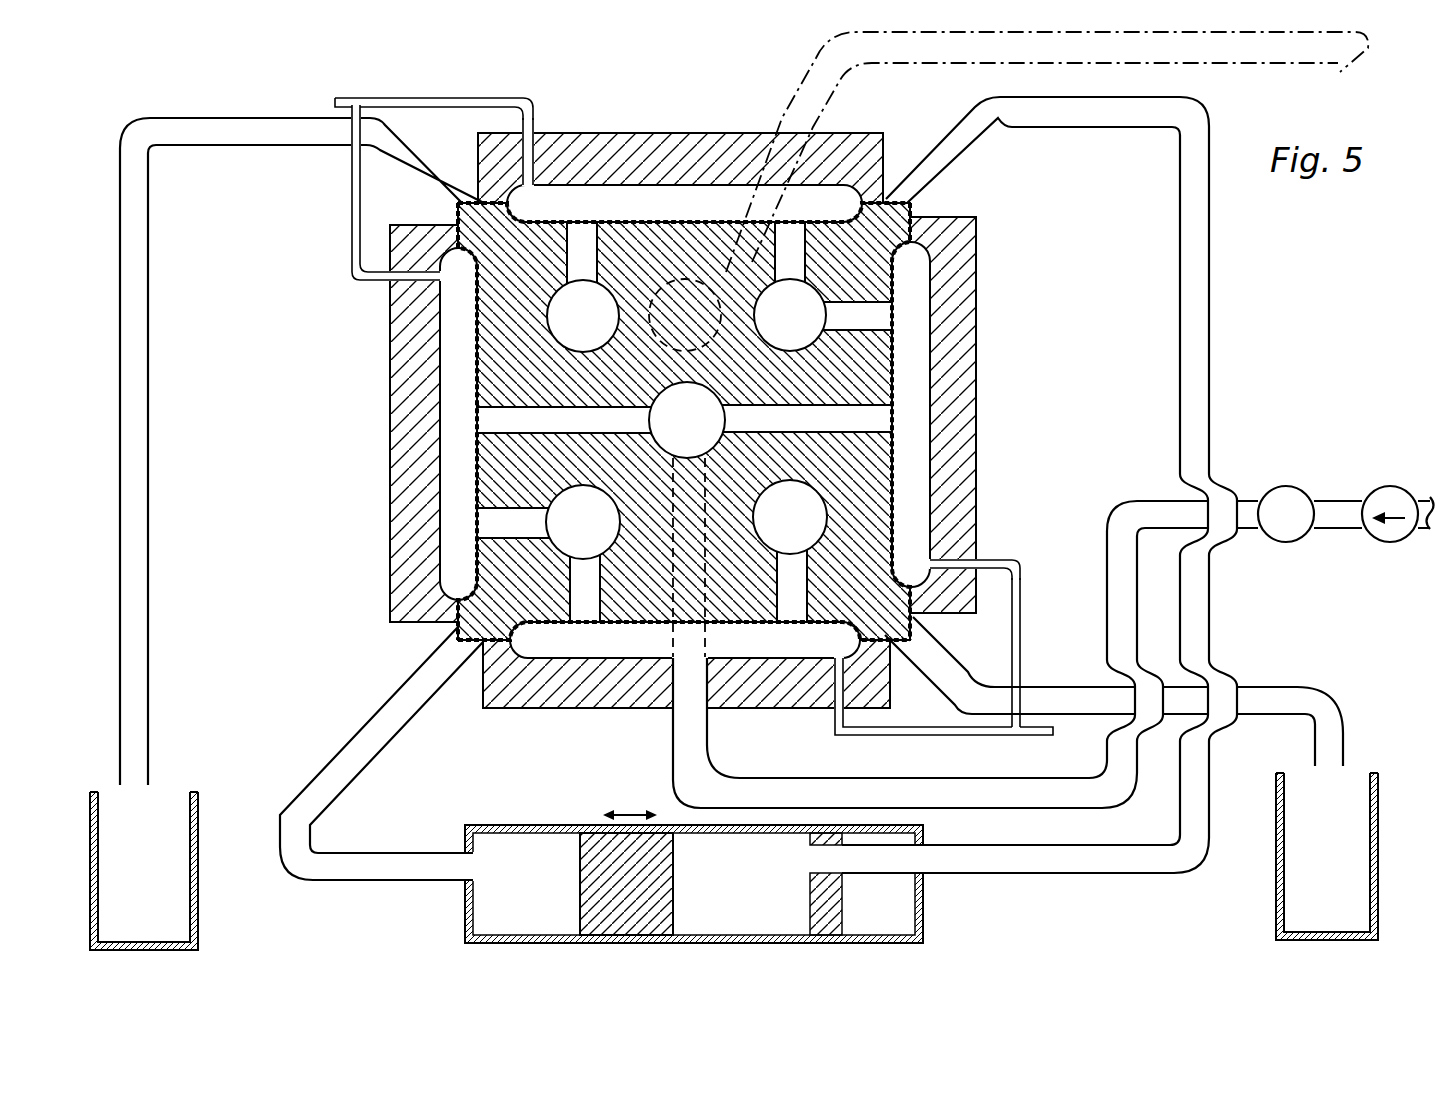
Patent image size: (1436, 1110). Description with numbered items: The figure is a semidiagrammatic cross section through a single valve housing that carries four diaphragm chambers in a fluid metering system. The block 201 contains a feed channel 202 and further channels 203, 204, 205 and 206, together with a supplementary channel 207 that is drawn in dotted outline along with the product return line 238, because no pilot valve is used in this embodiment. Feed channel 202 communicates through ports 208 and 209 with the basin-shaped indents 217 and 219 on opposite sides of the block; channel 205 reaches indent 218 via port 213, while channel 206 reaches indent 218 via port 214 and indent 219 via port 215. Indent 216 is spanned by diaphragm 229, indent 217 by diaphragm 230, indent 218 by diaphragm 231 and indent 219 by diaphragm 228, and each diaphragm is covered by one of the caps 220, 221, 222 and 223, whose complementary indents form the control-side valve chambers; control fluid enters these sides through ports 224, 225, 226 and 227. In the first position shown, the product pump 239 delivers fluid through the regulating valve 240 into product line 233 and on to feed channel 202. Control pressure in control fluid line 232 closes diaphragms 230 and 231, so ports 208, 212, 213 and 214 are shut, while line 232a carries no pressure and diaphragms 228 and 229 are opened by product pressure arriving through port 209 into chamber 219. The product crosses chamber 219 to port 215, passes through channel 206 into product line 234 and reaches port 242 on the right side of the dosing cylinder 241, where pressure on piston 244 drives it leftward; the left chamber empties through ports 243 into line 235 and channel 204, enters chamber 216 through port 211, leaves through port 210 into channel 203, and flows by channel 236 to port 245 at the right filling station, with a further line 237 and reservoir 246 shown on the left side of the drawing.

The block 201 is at (878, 480).
The feed channel 202 is at (673, 430).
The channel 203 is at (776, 531).
The channel 204 is at (569, 534).
The channel 205 is at (569, 328).
The channel 206 is at (776, 327).
The supplementary channel 207 is at (700, 282).
The port 208 is at (546, 428).
The port 209 is at (791, 428).
The port 210 is at (790, 600).
The port 211 is at (585, 600).
The port 212 is at (528, 534).
The port 213 is at (575, 250).
The port 214 is at (792, 247).
The port 215 is at (873, 327).
The indent 216 is at (721, 649).
The indent 217 is at (448, 398).
The indent 218 is at (636, 211).
The indent 219 is at (915, 343).
The cap 220 is at (665, 710).
The cap 221 is at (395, 543).
The cap 222 is at (640, 133).
The cap 223 is at (960, 290).
The port 224 is at (977, 562).
The port 225 is at (835, 712).
The port 226 is at (378, 278).
The port 227 is at (536, 137).
The diaphragm 228 is at (920, 416).
The diaphragm 229 is at (640, 655).
The diaphragm 230 is at (475, 312).
The diaphragm 231 is at (613, 215).
The control fluid line 232 is at (447, 96).
The control fluid line 232a is at (1022, 590).
The product line 233 is at (944, 779).
The product line 234 is at (1117, 128).
The line 235 is at (311, 827).
The channel 236 is at (1092, 715).
The conduit 237 is at (263, 147).
The product return line 238 is at (1335, 64).
The product pump 239 is at (1386, 486).
The regulating valve 240 is at (1296, 487).
The cylinder 241 is at (560, 825).
The port 242 is at (815, 870).
The ports 243 is at (483, 850).
The piston 244 is at (660, 835).
The port 245 is at (1325, 817).
The reservoir 246 is at (150, 828).